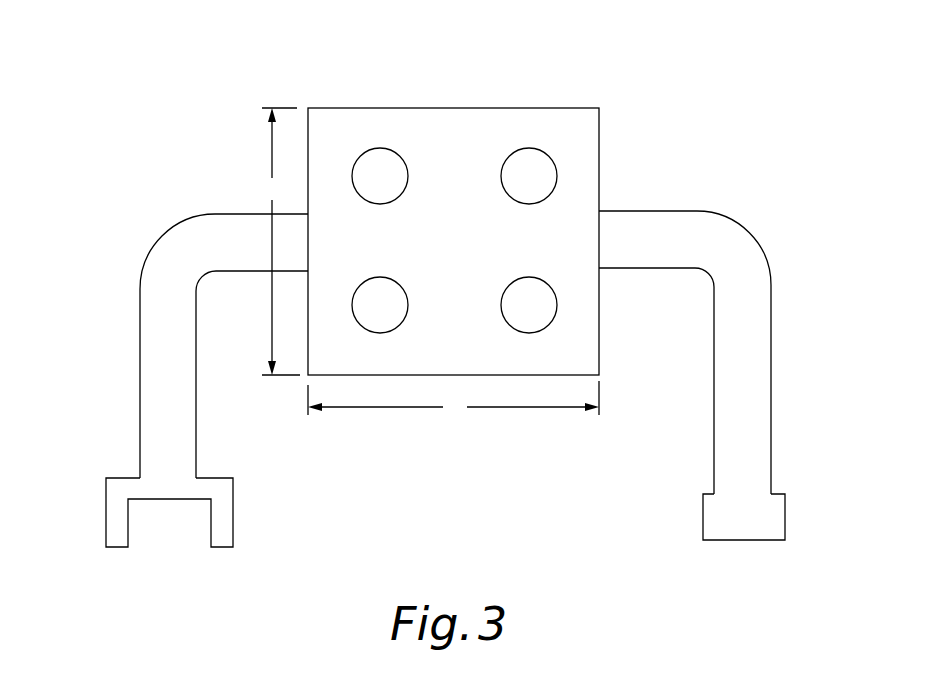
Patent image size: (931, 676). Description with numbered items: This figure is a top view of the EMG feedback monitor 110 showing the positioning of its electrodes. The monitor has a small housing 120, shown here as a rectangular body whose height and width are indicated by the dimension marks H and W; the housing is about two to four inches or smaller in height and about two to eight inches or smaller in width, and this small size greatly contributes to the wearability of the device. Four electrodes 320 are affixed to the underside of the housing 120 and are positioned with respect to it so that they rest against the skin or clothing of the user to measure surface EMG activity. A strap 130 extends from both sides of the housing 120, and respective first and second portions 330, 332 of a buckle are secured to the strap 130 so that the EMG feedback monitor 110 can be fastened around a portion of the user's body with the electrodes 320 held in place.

The EMG feedback monitor 110 is at (638, 76).
The housing 120 is at (465, 249).
The strap 130 is at (771, 366).
The electrodes 320 is at (363, 187).
The first portion of buckle 330 is at (785, 516).
The second portion of buckle 332 is at (106, 511).